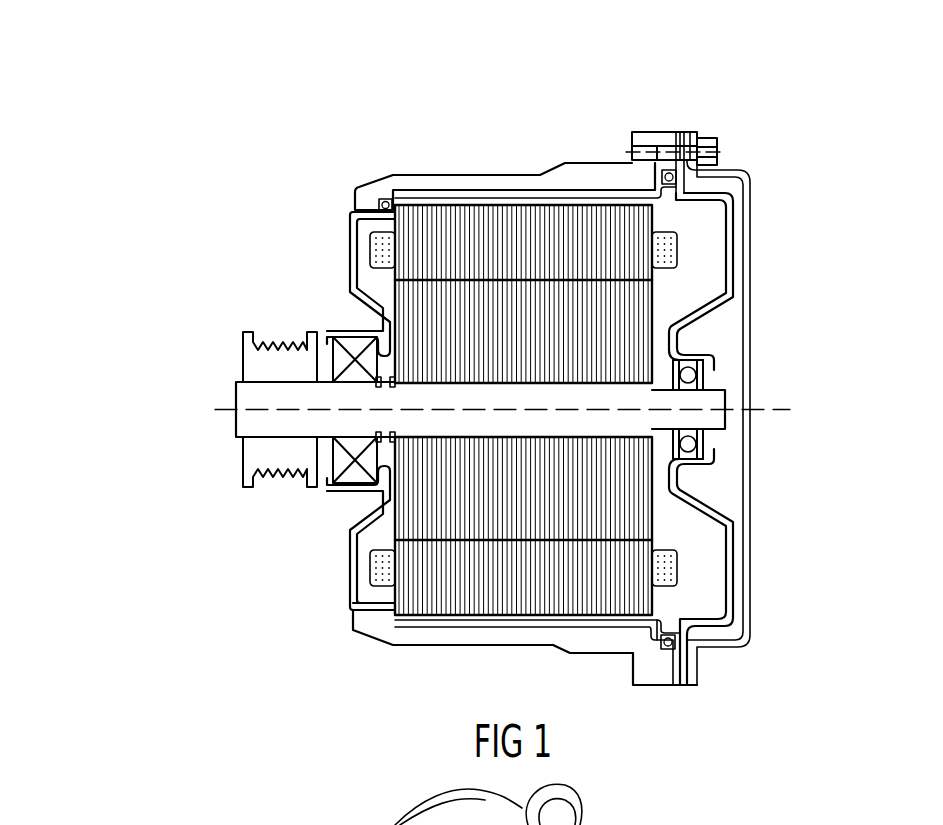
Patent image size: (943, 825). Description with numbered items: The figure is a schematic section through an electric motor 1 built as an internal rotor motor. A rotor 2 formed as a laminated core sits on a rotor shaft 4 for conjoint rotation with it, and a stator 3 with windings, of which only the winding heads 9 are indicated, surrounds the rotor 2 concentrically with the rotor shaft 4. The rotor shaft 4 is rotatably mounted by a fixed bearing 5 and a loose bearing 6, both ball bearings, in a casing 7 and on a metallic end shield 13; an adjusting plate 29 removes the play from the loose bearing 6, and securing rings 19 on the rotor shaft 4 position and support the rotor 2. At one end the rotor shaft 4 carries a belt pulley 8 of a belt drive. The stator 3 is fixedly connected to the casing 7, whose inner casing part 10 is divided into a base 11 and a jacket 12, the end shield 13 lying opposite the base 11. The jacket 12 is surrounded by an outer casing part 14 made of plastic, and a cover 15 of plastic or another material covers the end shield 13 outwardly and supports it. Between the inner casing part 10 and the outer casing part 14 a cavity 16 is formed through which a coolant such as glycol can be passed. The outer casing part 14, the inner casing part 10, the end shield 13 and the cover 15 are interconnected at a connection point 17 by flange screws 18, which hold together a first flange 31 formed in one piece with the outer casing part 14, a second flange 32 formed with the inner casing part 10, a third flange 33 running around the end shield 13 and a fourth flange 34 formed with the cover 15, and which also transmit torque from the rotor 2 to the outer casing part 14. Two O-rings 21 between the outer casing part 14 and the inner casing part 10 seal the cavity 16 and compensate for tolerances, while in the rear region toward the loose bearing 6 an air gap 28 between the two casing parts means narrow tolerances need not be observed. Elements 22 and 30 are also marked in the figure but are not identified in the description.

The electric motor 1 is at (203, 294).
The rotor 2 is at (634, 306).
The stator 3 is at (634, 229).
The rotor shaft 4 is at (252, 397).
The fixed bearing 5 is at (352, 472).
The loose bearing 6 is at (704, 449).
The casing 7 is at (347, 608).
The belt pulley 8 is at (258, 452).
The winding heads 9 is at (672, 258).
The inner casing part 10 is at (352, 243).
The base 11 is at (352, 280).
The jacket 12 is at (548, 200).
The end shield 13 is at (722, 320).
The outer casing part 14 is at (477, 178).
The cover 15 is at (750, 285).
The cavity 16 is at (464, 624).
The connection point 17 is at (692, 90).
The flange screws 18 is at (712, 152).
The securing rings 19 is at (385, 436).
The O-rings 21 is at (385, 202).
The mounting foot 22 is at (672, 697).
The air gap 28 is at (653, 176).
The adjusting plate 29 is at (708, 370).
The cover flange 30 is at (567, 640).
The first flange 31 is at (645, 136).
The second flange 32 is at (683, 160).
The third flange 33 is at (692, 133).
The fourth flange 34 is at (684, 133).